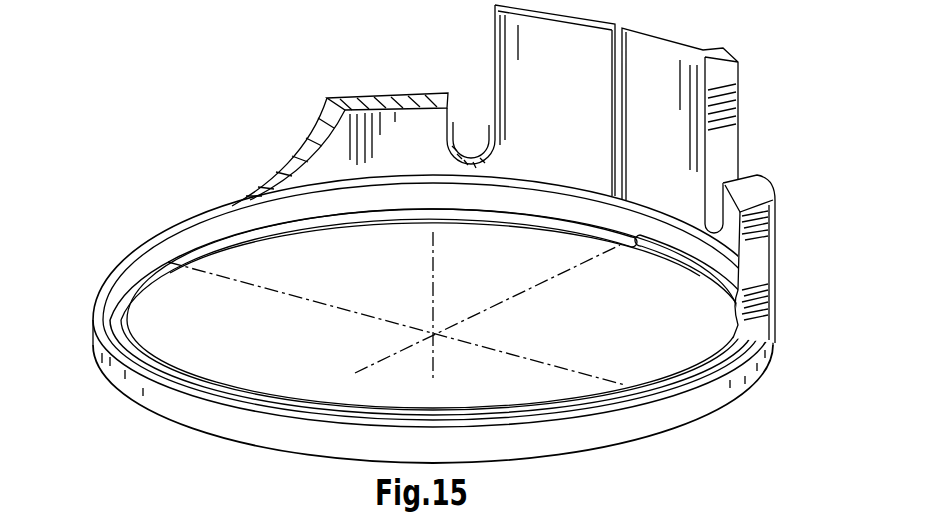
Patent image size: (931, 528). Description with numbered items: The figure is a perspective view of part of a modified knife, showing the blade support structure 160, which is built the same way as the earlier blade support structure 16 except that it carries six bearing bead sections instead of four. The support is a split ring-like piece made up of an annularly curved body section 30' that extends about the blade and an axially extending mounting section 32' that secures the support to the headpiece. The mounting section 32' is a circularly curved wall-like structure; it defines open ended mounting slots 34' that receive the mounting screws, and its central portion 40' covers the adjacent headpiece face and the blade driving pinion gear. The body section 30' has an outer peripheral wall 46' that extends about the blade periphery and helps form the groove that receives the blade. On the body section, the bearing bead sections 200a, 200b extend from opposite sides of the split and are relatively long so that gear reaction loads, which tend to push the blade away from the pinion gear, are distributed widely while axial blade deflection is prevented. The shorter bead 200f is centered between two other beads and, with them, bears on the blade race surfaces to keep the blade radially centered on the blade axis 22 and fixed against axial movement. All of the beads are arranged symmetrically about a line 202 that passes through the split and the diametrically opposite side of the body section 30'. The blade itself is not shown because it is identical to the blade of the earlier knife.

The body section 30' is at (433, 330).
The outer peripheral wall 46' is at (433, 425).
The bearing bead section 200a is at (643, 248).
The bearing bead section 200b is at (392, 215).
The bearing bead section 200f is at (155, 272).
The blade axis 22 is at (433, 272).
The line of symmetry 202 is at (372, 382).
The mounting slot 34' is at (363, 105).
The mounting section central portion 40' is at (616, 119).
The mounting section 32' is at (769, 187).
The blade support structure 160 is at (742, 130).
The blade support structure 16 is at (123, 252).